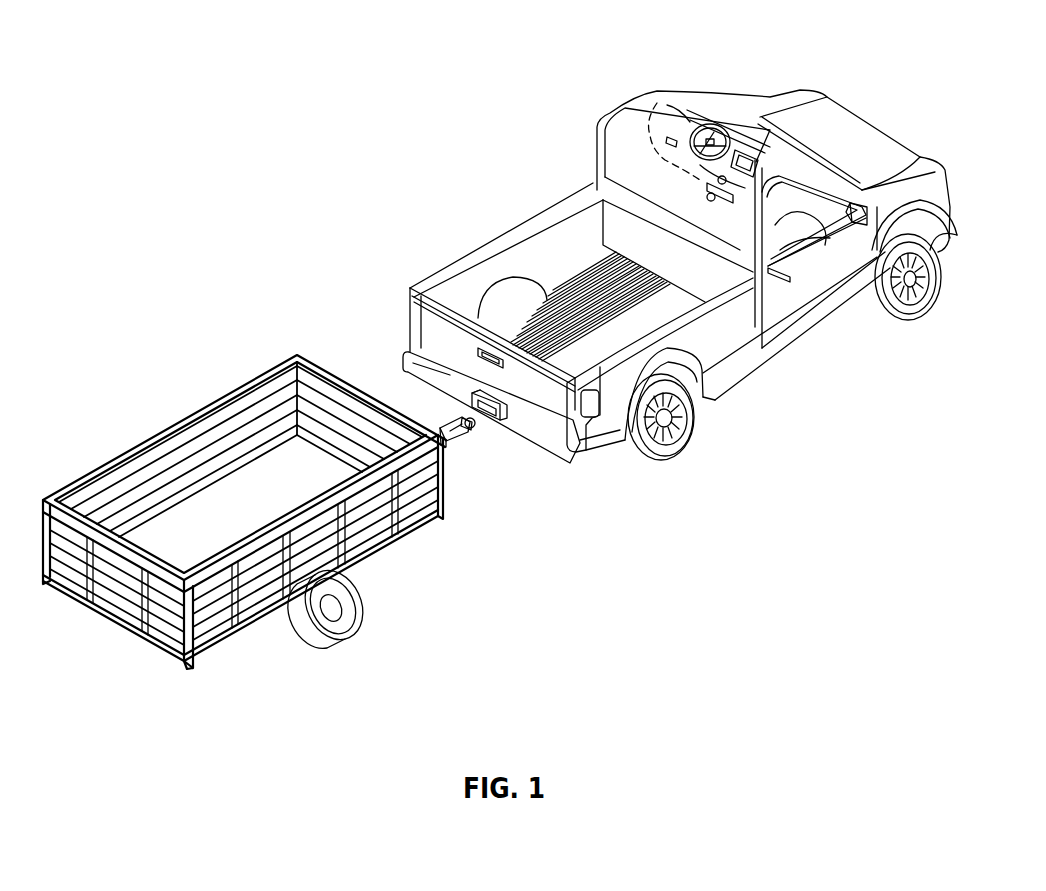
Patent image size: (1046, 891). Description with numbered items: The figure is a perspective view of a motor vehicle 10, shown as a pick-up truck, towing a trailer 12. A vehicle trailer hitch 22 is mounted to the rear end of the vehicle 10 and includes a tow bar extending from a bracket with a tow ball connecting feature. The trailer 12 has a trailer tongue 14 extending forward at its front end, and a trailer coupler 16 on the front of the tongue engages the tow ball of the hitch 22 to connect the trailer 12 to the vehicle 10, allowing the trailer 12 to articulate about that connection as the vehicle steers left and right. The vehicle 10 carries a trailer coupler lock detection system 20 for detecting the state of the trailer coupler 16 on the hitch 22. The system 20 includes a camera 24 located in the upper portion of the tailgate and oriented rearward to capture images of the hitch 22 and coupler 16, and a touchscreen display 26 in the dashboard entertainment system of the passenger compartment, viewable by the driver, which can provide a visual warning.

The vehicle 10 is at (681, 70).
The trailer 12 is at (180, 399).
The trailer tongue 14 is at (457, 447).
The trailer coupler 16 is at (475, 436).
The trailer coupler lock detection system 20 is at (448, 411).
The vehicle trailer hitch 22 is at (482, 421).
The camera 24 is at (447, 300).
The touchscreen display 26 is at (757, 172).